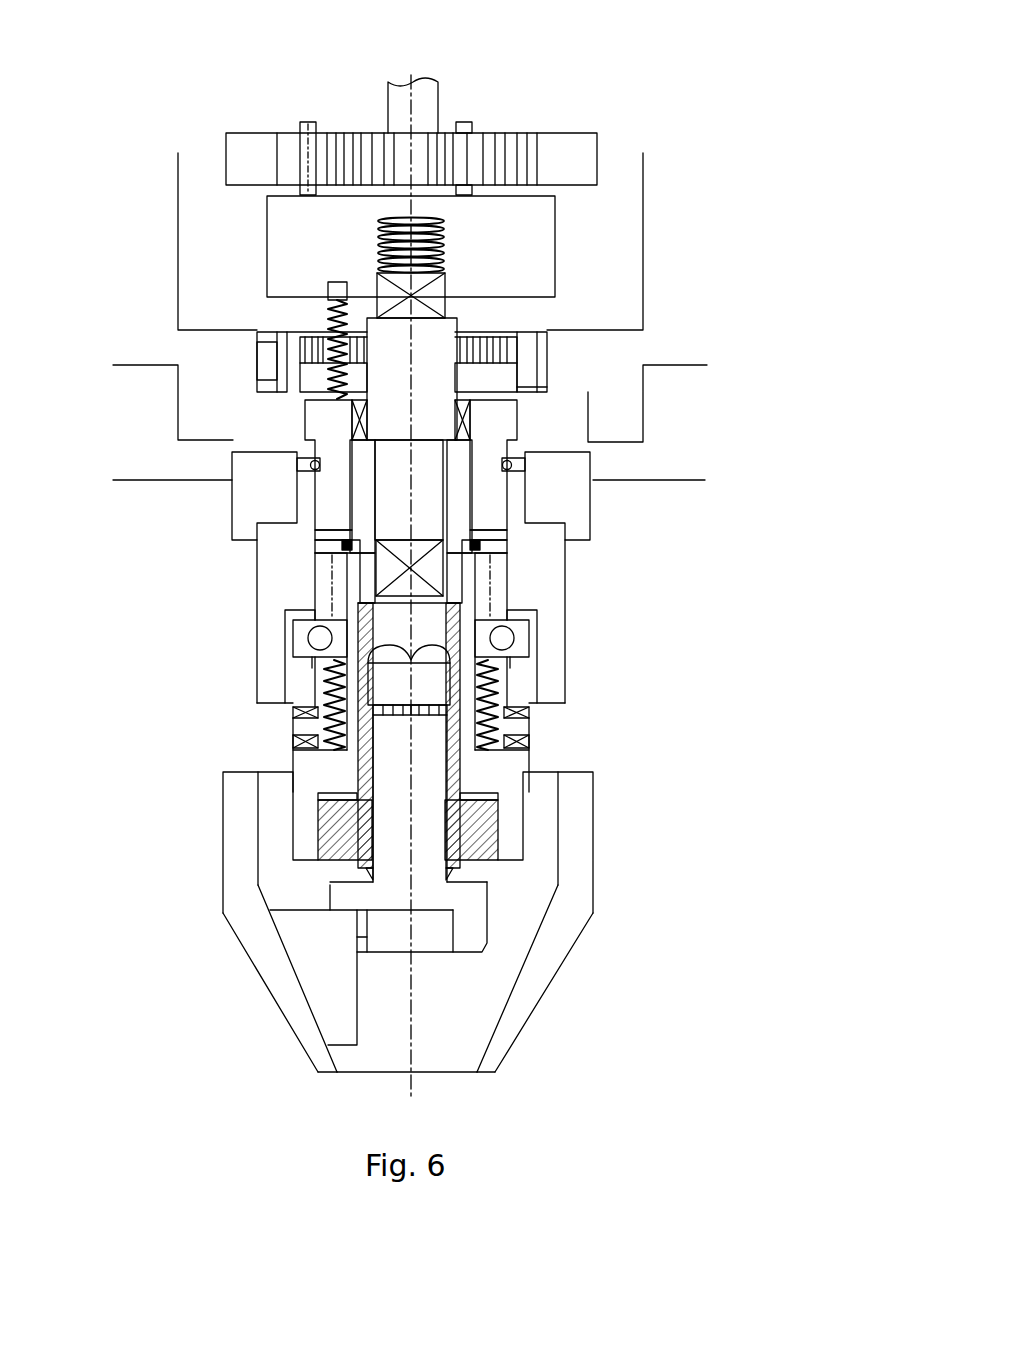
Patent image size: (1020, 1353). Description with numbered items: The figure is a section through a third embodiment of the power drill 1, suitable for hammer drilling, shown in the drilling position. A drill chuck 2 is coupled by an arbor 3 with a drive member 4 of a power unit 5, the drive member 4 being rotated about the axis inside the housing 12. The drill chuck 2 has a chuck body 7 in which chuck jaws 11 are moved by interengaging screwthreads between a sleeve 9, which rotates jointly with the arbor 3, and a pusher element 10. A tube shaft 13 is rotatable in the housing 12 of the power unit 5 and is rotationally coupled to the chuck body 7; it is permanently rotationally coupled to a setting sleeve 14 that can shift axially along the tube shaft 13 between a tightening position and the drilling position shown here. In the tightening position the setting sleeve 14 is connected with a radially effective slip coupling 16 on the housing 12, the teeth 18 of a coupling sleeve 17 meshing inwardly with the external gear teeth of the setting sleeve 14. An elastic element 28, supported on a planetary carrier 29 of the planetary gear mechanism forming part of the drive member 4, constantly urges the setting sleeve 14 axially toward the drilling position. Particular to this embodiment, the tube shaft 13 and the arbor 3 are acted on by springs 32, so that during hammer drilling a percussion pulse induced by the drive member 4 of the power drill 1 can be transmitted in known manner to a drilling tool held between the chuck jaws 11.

The power drill 1 is at (246, 120).
The drill chuck 2 is at (602, 1010).
The arbor 3 is at (432, 345).
The drive member 4 is at (455, 106).
The power unit 5 is at (742, 485).
The chuck body 7 is at (583, 915).
The sleeve 9 is at (350, 827).
The pusher element 10 is at (347, 888).
The chuck jaws 11 is at (333, 962).
The housing 12 is at (688, 265).
The tube shaft 13 is at (517, 775).
The setting sleeve 14 is at (488, 432).
The slip coupling 16 is at (283, 410).
The coupling sleeve 17 is at (535, 350).
The teeth 18 is at (495, 345).
The elastic element 28 is at (333, 300).
The planetary carrier 29 is at (500, 273).
The springs 32 is at (403, 247).